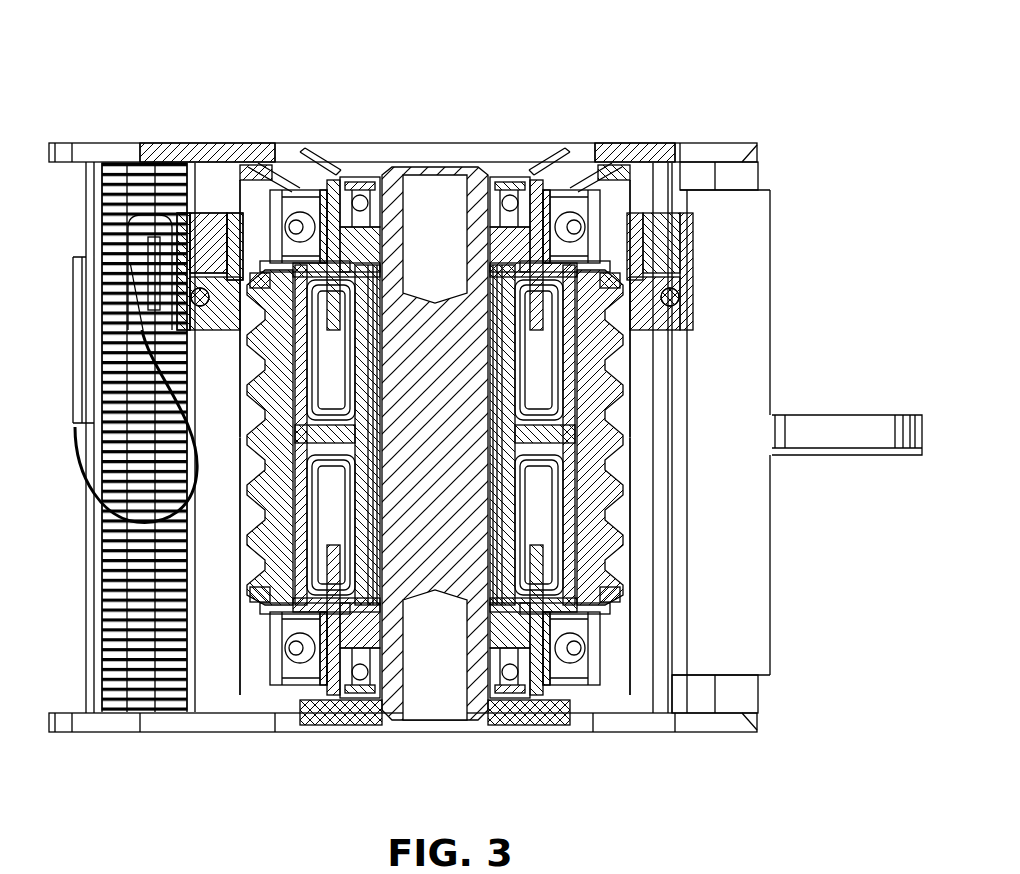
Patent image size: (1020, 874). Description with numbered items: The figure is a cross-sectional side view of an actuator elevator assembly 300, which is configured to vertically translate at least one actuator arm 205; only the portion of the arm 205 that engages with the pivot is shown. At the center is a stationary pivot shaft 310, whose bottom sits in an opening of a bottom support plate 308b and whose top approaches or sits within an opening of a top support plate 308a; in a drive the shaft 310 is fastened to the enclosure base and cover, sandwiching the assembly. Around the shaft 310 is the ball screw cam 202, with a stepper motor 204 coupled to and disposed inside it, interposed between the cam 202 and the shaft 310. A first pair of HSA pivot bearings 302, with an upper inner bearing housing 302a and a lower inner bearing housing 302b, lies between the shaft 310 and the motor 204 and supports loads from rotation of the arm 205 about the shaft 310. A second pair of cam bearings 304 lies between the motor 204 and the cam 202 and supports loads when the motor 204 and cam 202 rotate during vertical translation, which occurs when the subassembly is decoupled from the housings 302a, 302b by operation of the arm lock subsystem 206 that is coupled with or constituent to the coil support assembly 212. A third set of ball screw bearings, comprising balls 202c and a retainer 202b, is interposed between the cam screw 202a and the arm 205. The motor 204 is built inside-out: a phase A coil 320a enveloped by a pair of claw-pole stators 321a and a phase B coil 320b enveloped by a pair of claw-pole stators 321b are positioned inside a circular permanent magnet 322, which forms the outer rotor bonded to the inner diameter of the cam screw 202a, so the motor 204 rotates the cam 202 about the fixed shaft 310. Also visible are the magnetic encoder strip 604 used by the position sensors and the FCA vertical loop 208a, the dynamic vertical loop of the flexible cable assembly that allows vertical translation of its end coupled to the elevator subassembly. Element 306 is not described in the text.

The actuator elevator assembly 300 is at (116, 28).
The actuator arm 205 is at (150, 236).
The balls 202c is at (190, 215).
The retainer 202b is at (226, 215).
The ball screw cam 202 is at (240, 212).
The upper inner bearing housing 302a is at (318, 325).
The cam bearings 304 is at (298, 222).
The HSA pivot bearings 302 is at (363, 192).
The stepper motor 204 is at (426, 152).
The pivot shaft 310 is at (441, 187).
The top support plate 308a is at (718, 152).
The coil support assembly 212 is at (758, 153).
The housing 306 is at (772, 192).
The claw-pole stators 321a is at (560, 325).
The phase A coil 320a is at (540, 385).
The permanent magnet 322 is at (595, 410).
The arm lock subsystem 206 is at (853, 443).
The claw-pole stators 321b is at (575, 465).
The phase B coil 320b is at (547, 523).
The bottom support plate 308b is at (712, 722).
The lower inner bearing housing 302b is at (285, 728).
The cam screw 202a is at (237, 718).
The magnetic encoder strip 604 is at (175, 703).
The FCA vertical loop 208a is at (73, 432).